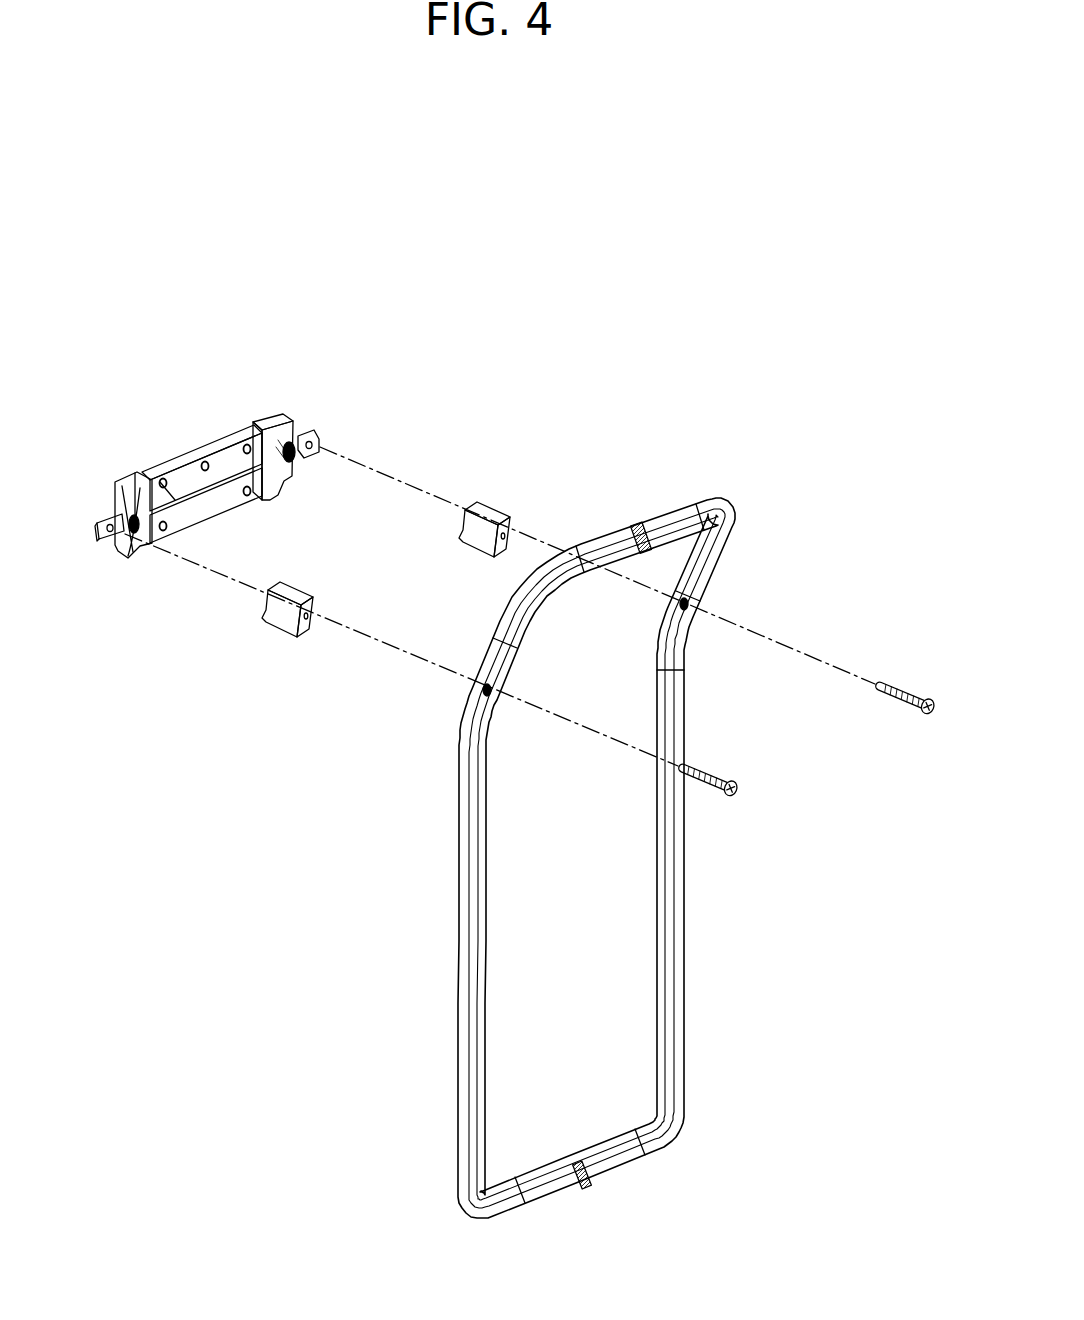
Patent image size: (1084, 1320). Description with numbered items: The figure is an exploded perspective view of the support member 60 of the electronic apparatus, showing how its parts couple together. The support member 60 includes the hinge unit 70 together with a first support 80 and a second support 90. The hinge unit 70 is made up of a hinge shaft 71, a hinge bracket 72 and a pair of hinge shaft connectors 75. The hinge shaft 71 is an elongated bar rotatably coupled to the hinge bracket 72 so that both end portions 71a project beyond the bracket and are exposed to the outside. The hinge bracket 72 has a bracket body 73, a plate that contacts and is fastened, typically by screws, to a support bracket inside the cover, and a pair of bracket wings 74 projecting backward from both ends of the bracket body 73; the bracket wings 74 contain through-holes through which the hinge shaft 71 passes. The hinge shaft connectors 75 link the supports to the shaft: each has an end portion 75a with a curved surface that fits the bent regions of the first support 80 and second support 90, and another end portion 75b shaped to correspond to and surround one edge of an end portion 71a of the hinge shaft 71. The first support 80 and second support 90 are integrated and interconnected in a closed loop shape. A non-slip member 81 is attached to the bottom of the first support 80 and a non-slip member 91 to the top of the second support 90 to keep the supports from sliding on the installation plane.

The support member 60 is at (733, 322).
The hinge unit 70 is at (298, 441).
The hinge shaft 71 is at (147, 473).
The end portions of the hinge shaft 71a is at (313, 436).
The hinge bracket 72 is at (210, 416).
The bracket body 73 is at (204, 460).
The bracket wings 74 is at (187, 336).
The hinge shaft connectors 75 is at (404, 463).
The end portions of the hinge shaft connectors 75a is at (517, 530).
The other end portions of the hinge shaft connectors 75b is at (461, 510).
The first support 80 is at (627, 849).
The non-slip member 81 is at (585, 1187).
The second support 90 is at (717, 557).
The non-slip member 91 is at (640, 527).